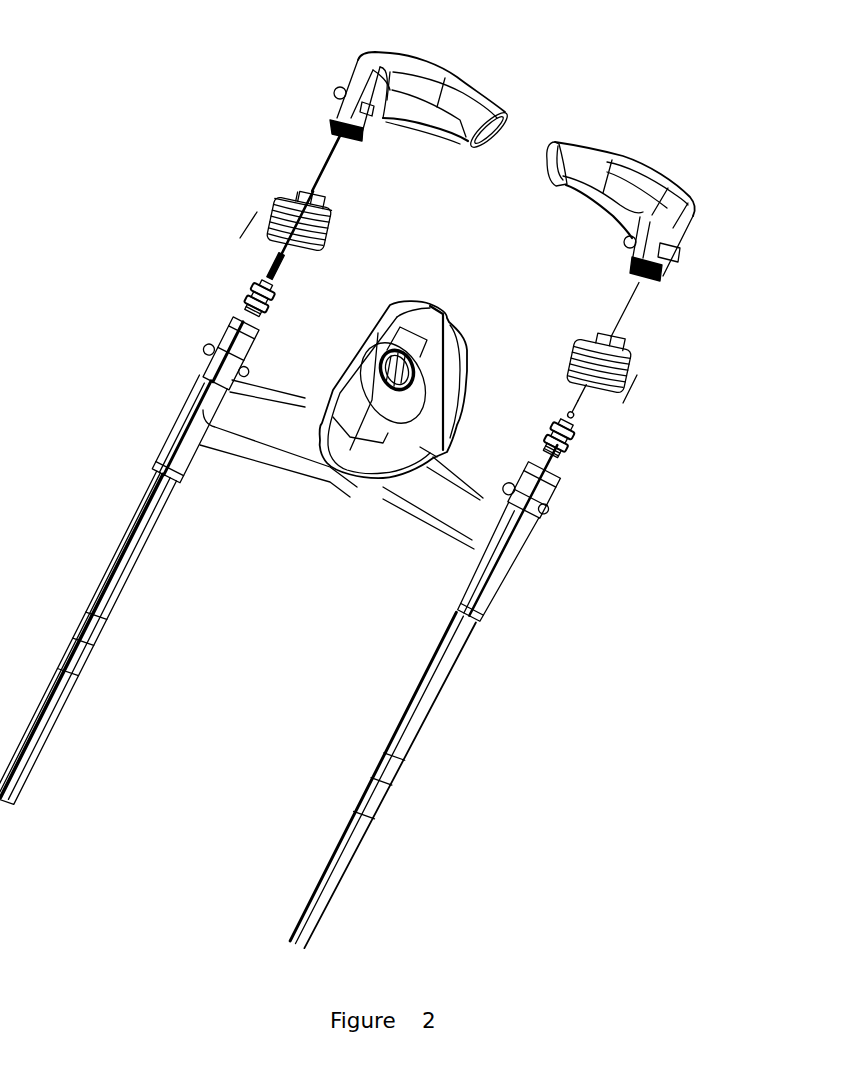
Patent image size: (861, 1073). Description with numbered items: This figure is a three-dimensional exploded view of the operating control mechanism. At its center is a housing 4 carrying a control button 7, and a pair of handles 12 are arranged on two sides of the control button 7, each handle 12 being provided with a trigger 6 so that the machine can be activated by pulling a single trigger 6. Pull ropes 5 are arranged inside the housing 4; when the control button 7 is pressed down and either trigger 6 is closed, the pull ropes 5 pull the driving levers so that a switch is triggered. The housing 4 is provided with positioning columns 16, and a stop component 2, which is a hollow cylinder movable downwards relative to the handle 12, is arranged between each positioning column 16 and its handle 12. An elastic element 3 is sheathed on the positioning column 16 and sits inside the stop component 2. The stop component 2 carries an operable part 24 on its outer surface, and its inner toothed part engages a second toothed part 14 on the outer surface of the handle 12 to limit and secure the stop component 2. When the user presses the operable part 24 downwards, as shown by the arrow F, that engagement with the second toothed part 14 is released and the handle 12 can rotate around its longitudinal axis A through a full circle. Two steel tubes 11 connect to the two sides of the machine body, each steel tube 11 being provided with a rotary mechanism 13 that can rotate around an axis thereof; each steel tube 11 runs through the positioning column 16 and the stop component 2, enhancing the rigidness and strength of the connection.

The stop component 2 is at (293, 197).
The elastic element 3 is at (240, 307).
The housing 4 is at (300, 422).
The pull rope 5 is at (277, 277).
The trigger 6 is at (402, 120).
The control button 7 is at (443, 312).
The steel tube 11 is at (137, 527).
The handle 12 is at (360, 73).
The rotary mechanism 13 is at (170, 450).
The second toothed part 14 is at (335, 122).
The positioning column 16 is at (230, 327).
The operable part 24 is at (280, 208).
The longitudinal axis A is at (330, 143).
The arrow F is at (428, 326).